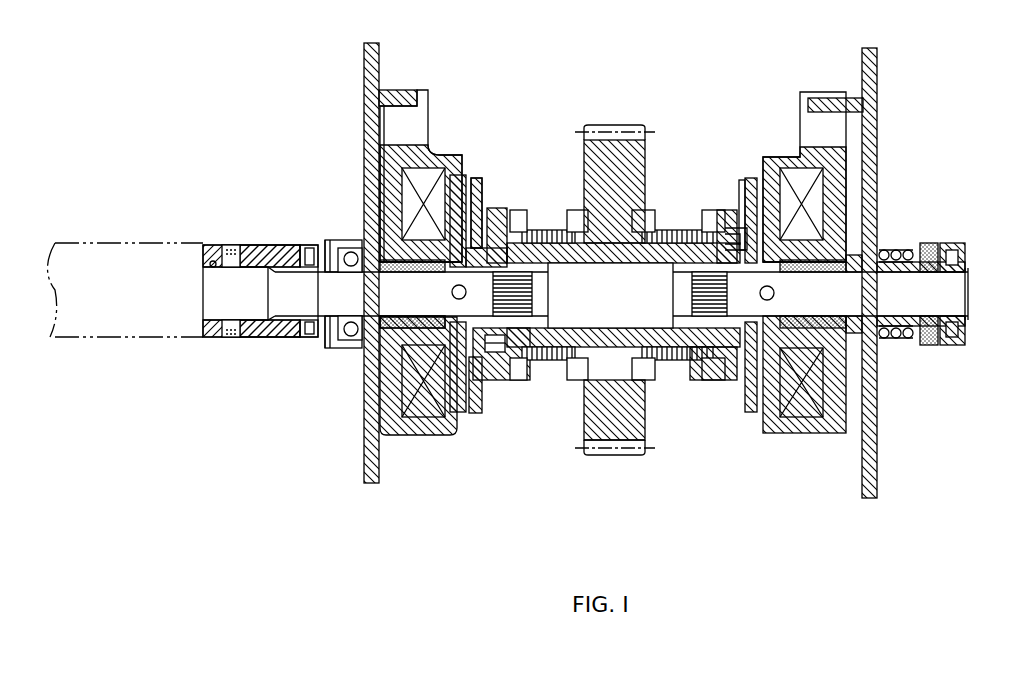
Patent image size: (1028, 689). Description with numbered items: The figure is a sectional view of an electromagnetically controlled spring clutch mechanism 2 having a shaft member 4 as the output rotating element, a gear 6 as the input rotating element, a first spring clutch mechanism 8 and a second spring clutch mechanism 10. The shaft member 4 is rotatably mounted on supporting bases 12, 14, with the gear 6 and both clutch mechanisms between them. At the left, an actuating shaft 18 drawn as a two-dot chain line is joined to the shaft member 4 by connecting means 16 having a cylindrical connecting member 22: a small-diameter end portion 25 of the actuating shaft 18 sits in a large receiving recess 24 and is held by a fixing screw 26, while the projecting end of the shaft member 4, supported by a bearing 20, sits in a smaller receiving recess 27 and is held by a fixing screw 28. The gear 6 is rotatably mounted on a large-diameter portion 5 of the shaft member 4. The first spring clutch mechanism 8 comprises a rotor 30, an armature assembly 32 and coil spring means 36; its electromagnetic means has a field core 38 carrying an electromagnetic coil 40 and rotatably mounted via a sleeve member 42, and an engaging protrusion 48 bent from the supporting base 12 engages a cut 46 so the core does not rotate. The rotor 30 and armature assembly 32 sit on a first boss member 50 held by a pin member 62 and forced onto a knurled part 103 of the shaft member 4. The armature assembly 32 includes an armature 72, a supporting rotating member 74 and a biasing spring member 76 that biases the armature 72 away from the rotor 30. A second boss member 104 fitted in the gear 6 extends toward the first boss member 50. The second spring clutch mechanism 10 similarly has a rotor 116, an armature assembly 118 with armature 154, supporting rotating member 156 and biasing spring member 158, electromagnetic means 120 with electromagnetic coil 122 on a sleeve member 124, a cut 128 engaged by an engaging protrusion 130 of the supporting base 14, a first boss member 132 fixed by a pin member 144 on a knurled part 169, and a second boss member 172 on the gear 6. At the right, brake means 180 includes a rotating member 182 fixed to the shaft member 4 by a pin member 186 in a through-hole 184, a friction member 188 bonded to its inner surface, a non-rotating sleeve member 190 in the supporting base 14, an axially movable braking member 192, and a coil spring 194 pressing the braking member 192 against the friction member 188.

The electromagnetically controlled spring clutch mechanism 2 is at (445, 470).
The shaft member 4 is at (392, 322).
The large-diameter portion 5 is at (582, 400).
The gear 6 is at (638, 160).
The first spring clutch mechanism 8 is at (478, 172).
The second spring clutch mechanism 10 is at (750, 470).
The supporting base 12 is at (364, 460).
The supporting base 14 is at (877, 462).
The connecting means 16 is at (258, 348).
The actuating shaft 18 is at (108, 337).
The bearing 20 is at (340, 250).
The connecting member 22 is at (266, 245).
The receiving recess 24 is at (220, 258).
The small-diameter end portion 25 is at (248, 337).
The fixing screw 26 is at (228, 337).
The receiving recess 27 is at (306, 337).
The fixing screw 28 is at (327, 245).
The rotor 30 is at (468, 175).
The armature assembly 32 is at (482, 418).
The coil spring means 36 is at (538, 348).
The field core 38 is at (384, 412).
The electromagnetic coil 40 is at (430, 417).
The sleeve member 42 is at (385, 262).
The cut 46 is at (420, 128).
The engaging protrusion 48 is at (398, 96).
The first boss member 50 is at (500, 210).
The pin member 62 is at (452, 292).
The armature 72 is at (485, 355).
The supporting rotating member 74 is at (508, 382).
The biasing spring member 76 is at (487, 205).
The knurled part 103 is at (520, 212).
The second boss member 104 is at (555, 230).
The rotor 116 is at (742, 180).
The armature assembly 118 is at (730, 440).
The electromagnetic means 120 is at (840, 405).
The electromagnetic coil 122 is at (700, 230).
The sleeve member 124 is at (855, 260).
The cut 128 is at (800, 125).
The engaging protrusion 130 is at (826, 98).
The first boss member 132 is at (725, 210).
The pin member 144 is at (774, 293).
The armature 154 is at (748, 178).
The supporting rotating member 156 is at (745, 380).
The biasing spring member 158 is at (733, 228).
The knurled part 169 is at (665, 348).
The second boss member 172 is at (660, 400).
The brake means 180 is at (940, 352).
The rotating member 182 is at (963, 248).
The through-hole 184 is at (962, 340).
The pin member 186 is at (958, 262).
The friction member 188 is at (932, 243).
The sleeve member 190 is at (885, 340).
The braking member 192 is at (905, 250).
The coil spring 194 is at (910, 340).